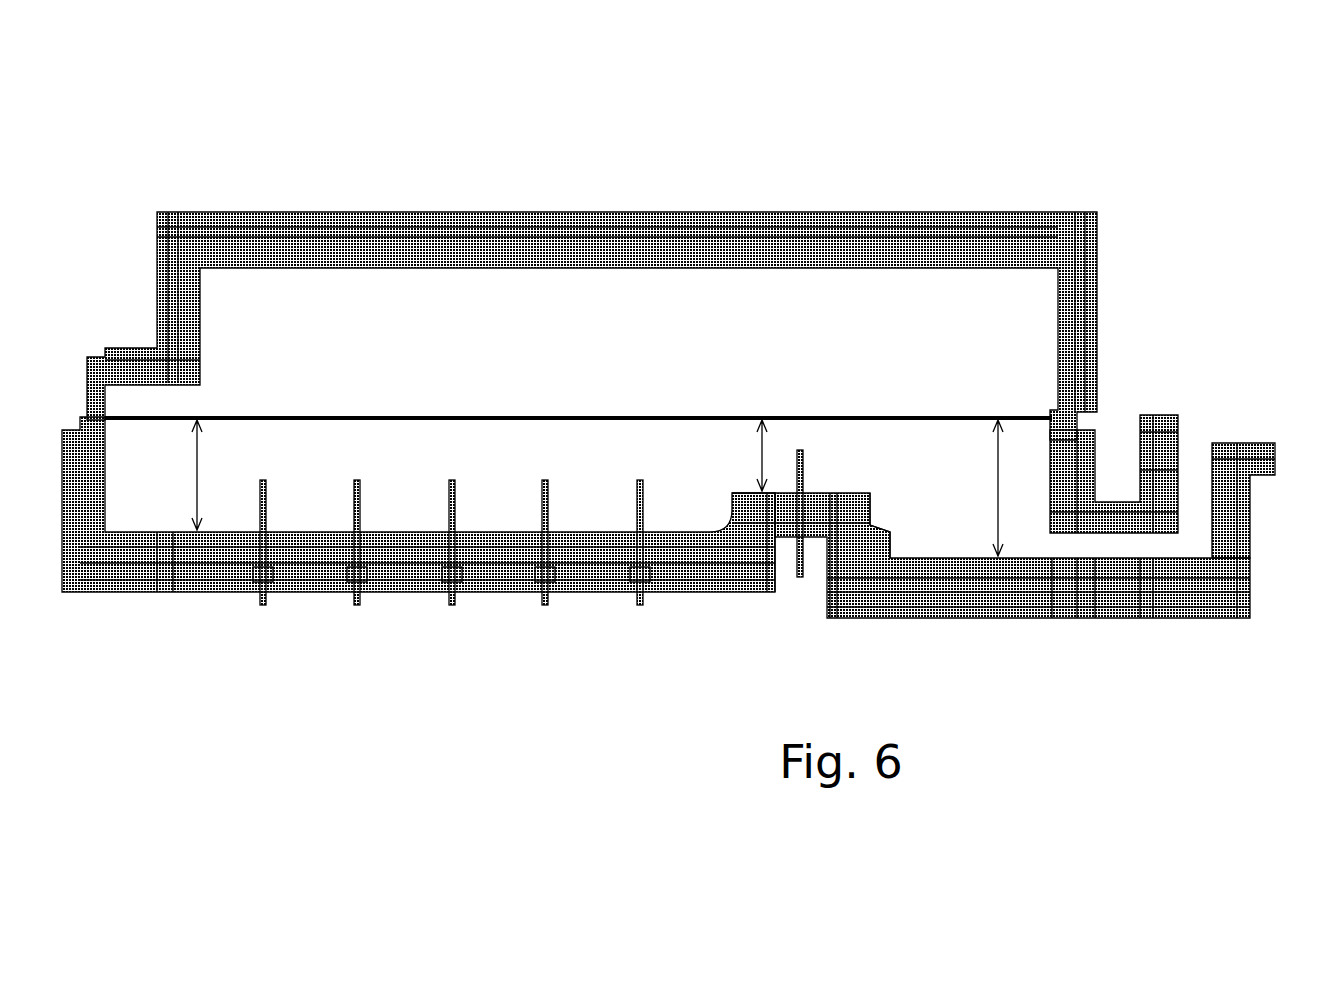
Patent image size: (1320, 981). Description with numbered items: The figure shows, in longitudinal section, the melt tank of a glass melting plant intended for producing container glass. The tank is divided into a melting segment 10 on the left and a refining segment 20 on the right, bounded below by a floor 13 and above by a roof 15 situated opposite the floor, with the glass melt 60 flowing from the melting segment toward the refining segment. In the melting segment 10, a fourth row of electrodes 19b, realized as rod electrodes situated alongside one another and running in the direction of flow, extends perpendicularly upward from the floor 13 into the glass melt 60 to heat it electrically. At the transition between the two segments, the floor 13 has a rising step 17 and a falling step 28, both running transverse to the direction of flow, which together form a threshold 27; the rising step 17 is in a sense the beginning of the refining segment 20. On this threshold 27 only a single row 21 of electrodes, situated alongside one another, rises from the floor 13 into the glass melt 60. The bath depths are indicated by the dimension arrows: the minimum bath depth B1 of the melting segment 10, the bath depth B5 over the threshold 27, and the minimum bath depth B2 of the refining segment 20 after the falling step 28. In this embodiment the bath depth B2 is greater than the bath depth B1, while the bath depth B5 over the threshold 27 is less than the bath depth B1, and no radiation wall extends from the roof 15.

The melting segment 10 is at (88, 97).
The refining segment 20 is at (1085, 102).
The floor 13 is at (415, 530).
The roof 15 is at (497, 223).
The rising step 17 is at (732, 508).
The fourth row of electrodes 19b is at (258, 487).
The first row of electrodes 21 is at (798, 472).
The threshold 27 is at (845, 493).
The falling step 28 is at (870, 512).
The glass melt 60 is at (928, 418).
The bath depth in melting segment B1 is at (174, 475).
The bath depth in refining segment B2 is at (973, 488).
The bath depth over threshold B5 is at (742, 455).